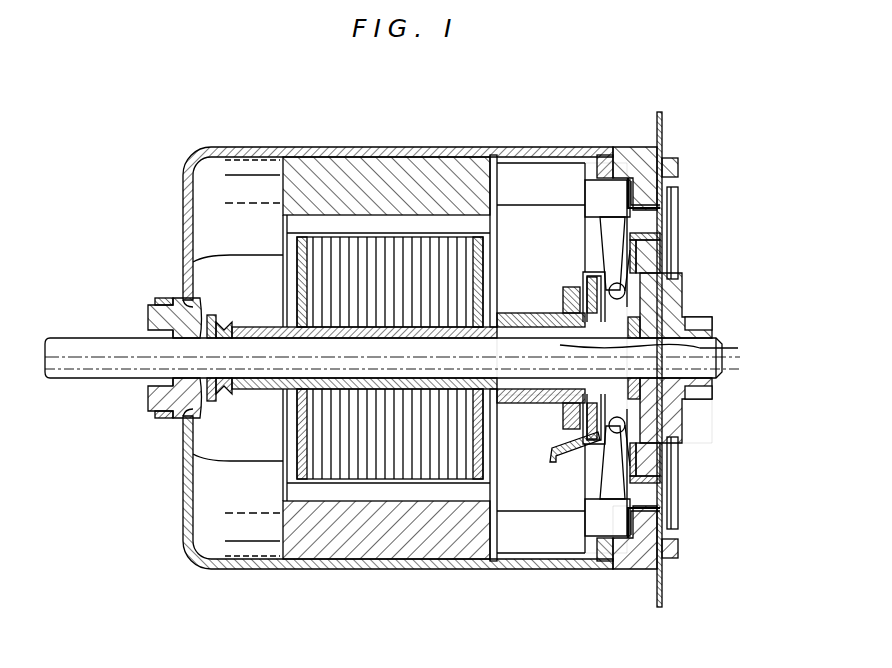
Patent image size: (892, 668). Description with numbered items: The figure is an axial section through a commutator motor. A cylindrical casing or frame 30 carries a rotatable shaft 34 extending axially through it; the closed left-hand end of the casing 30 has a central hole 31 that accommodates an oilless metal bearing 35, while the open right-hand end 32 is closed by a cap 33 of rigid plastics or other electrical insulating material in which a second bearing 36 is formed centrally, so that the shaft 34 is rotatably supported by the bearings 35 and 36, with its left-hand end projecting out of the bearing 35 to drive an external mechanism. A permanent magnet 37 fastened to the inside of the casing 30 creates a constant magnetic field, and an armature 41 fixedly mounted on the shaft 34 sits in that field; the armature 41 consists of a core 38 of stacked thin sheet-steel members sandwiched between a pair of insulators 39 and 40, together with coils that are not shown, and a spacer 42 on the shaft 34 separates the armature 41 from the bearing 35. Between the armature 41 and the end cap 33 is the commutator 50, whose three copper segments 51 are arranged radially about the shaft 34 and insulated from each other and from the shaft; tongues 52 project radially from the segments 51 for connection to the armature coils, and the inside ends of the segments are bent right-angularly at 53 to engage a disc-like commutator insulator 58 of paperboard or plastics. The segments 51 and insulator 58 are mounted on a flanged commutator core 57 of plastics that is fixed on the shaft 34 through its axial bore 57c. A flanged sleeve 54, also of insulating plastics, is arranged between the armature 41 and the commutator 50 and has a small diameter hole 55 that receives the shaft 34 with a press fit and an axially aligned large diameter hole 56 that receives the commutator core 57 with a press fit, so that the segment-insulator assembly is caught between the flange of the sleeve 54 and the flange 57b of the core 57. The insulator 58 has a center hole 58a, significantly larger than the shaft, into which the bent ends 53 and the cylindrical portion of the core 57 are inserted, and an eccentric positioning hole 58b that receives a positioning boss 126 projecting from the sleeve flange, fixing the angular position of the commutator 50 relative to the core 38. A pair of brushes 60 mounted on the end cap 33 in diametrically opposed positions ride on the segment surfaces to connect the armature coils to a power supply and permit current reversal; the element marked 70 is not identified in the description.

The casing 30 is at (245, 147).
The hole 31 is at (166, 300).
The right-hand end 32 is at (628, 570).
The cap 33 is at (622, 165).
The shaft 34 is at (88, 375).
The oilless metal bearing 35 is at (158, 320).
The bearing 36 is at (715, 395).
The permanent magnet 37 is at (392, 172).
The core 38 is at (300, 235).
The insulator 39 is at (290, 215).
The insulator 40 is at (390, 268).
The armature 41 is at (352, 237).
The spacer 42 is at (247, 393).
The commutator 50 is at (604, 205).
The segments 51 is at (642, 311).
The tongues 52 is at (552, 403).
The inside ends 53 is at (560, 290).
The flanged sleeve 54 is at (507, 405).
The small diameter hole 55 is at (493, 215).
The large diameter hole 56 is at (568, 415).
The commutator core 57 is at (528, 405).
The flange 57b is at (632, 330).
The axial bore 57c is at (512, 215).
The commutator insulator 58 is at (595, 450).
The center hole 58a is at (673, 348).
The eccentric positioning hole 58b is at (620, 425).
The brushes 60 is at (642, 266).
The plate 70 is at (713, 87).
The positioning boss 126 is at (674, 410).